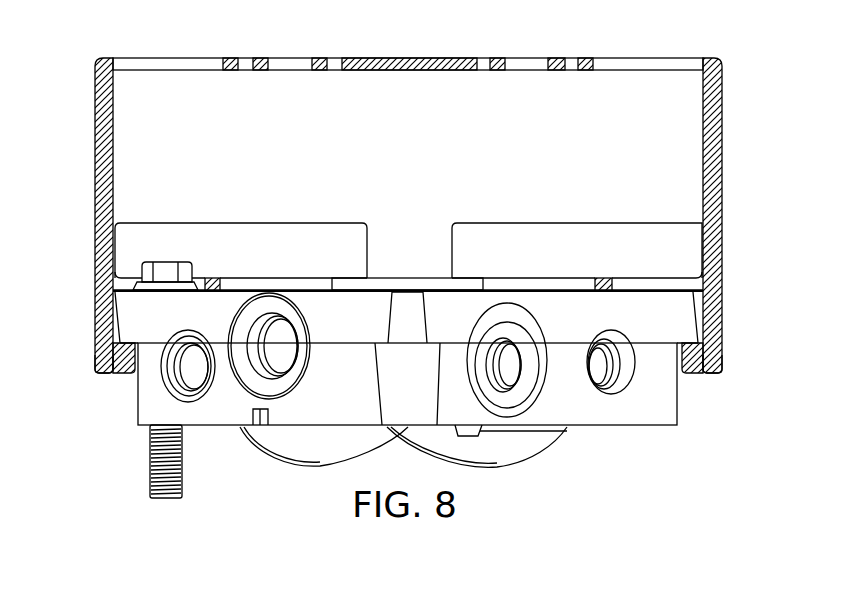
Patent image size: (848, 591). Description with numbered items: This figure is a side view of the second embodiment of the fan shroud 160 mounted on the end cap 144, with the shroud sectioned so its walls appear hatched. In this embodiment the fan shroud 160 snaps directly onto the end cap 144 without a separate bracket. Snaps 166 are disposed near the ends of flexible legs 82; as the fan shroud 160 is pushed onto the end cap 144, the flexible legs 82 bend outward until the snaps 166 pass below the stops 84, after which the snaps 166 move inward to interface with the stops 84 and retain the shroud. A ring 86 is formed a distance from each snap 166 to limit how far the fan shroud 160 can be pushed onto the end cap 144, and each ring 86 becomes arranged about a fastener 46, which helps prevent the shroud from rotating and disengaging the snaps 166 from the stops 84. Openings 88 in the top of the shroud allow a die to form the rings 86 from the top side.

The fastener 46 is at (167, 261).
The flexible legs 82 is at (94, 313).
The stops 84 is at (126, 374).
The ring 86 is at (222, 287).
The openings 88 is at (166, 57).
The end cap 144 is at (362, 397).
The fan shroud 160 is at (378, 194).
The snaps 166 is at (106, 374).